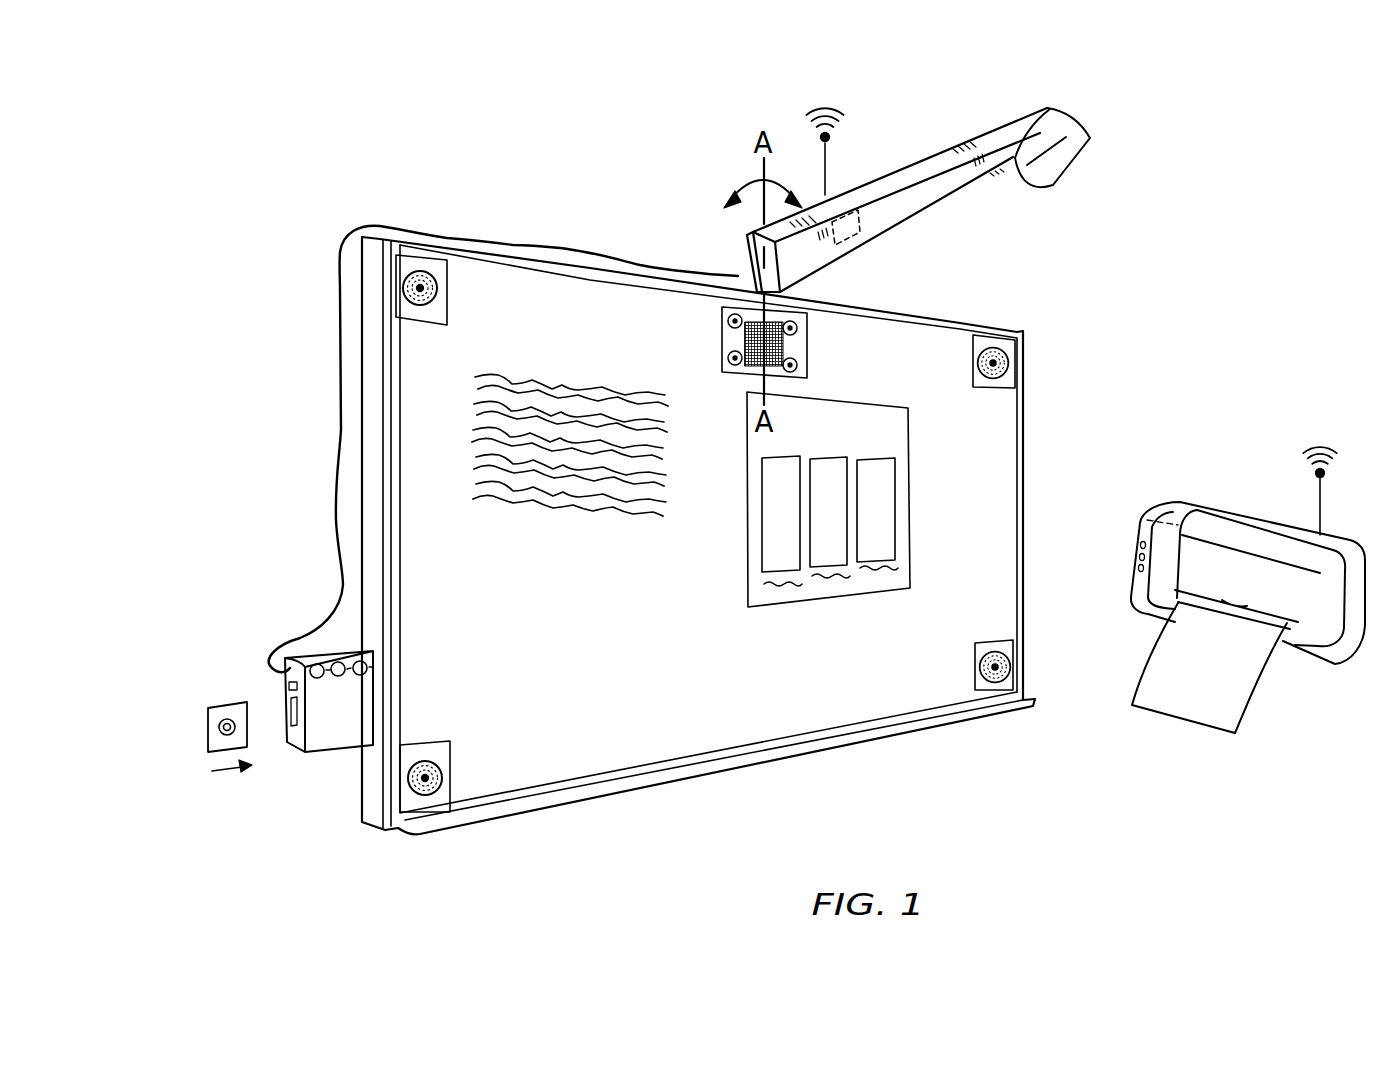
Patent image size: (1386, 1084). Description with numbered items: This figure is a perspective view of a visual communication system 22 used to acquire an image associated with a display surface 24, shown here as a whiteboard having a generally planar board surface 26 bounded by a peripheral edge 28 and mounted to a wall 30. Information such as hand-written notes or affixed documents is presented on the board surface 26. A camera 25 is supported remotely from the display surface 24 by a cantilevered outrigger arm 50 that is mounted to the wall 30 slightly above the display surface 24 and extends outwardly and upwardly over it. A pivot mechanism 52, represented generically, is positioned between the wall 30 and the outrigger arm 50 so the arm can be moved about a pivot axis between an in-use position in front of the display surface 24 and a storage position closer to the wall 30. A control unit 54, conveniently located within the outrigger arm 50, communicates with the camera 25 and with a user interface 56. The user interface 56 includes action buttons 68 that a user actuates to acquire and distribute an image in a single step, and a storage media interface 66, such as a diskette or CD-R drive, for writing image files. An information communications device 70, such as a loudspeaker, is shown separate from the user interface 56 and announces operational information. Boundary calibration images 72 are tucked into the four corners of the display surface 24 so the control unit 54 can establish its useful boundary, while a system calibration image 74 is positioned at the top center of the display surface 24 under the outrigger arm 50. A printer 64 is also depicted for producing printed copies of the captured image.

The visual communication system 22 is at (1170, 299).
The display surface 24 is at (983, 462).
The camera 25 is at (1070, 158).
The board surface 26 is at (648, 634).
The edge 28 is at (373, 420).
The wall 30 is at (208, 310).
The outrigger arm 50 is at (913, 183).
The pivot mechanism 52 is at (742, 251).
The control unit 54 is at (838, 208).
The user interface 56 is at (336, 736).
The printer 64 is at (1187, 500).
The storage media interface 66 is at (289, 699).
The action button 68 is at (362, 660).
The information communications device 70 is at (285, 687).
The boundary calibration image 72 is at (987, 345).
The system calibration image 74 is at (805, 345).